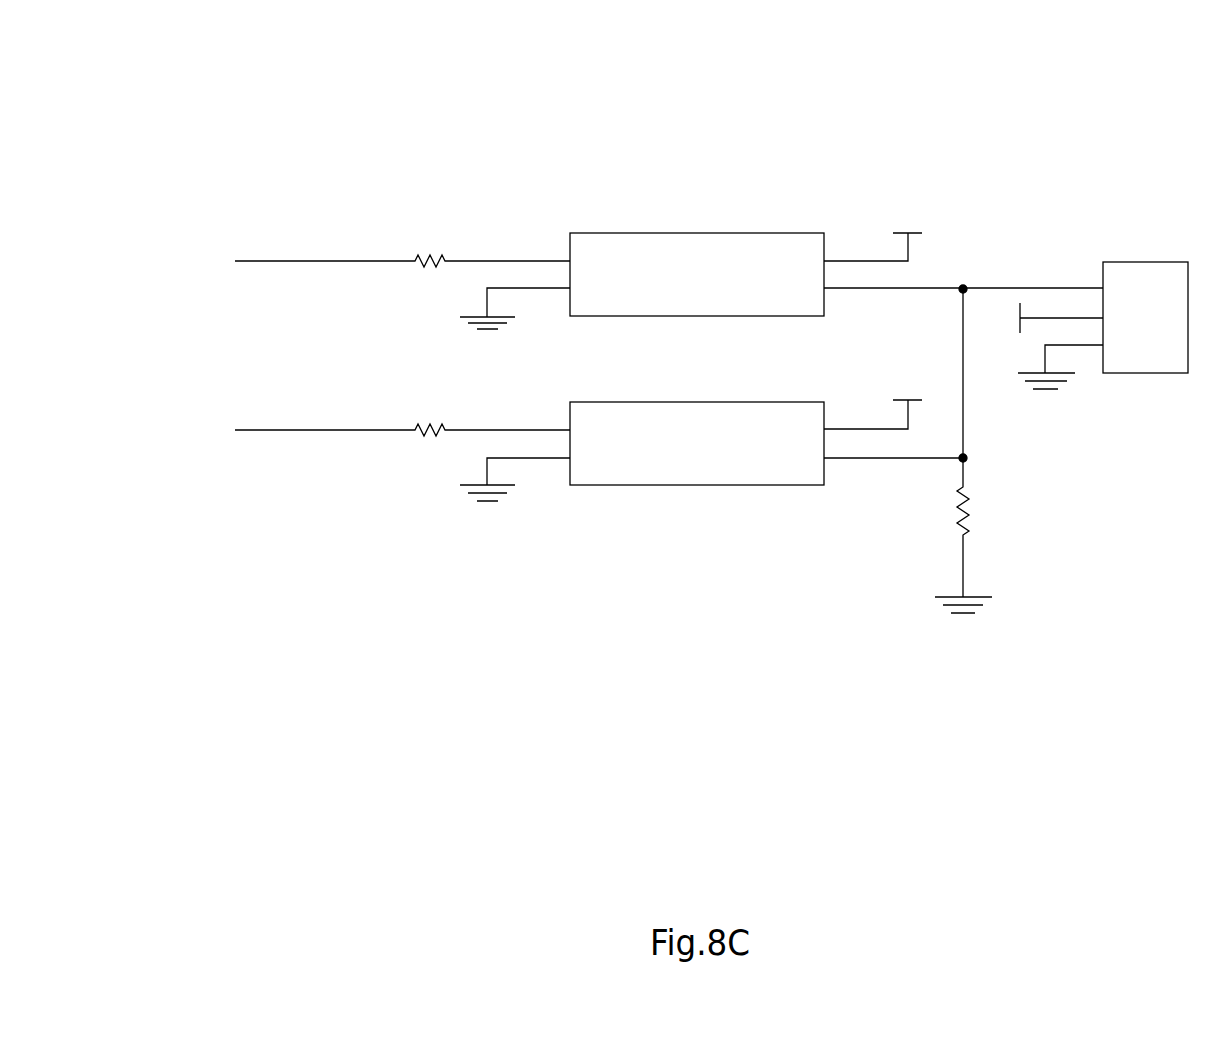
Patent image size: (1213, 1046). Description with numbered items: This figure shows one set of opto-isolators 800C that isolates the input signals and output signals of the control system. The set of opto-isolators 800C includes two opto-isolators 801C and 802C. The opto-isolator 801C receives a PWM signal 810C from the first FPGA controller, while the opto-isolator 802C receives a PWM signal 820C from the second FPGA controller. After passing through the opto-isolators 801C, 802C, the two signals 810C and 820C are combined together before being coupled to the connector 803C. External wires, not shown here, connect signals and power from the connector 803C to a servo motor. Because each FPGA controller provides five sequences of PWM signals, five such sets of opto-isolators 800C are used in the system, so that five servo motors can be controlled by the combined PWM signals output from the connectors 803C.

The set of opto-isolators 800C is at (251, 86).
The PWM signal 810C is at (332, 233).
The PWM signal 820C is at (322, 408).
The opto-isolator 801C is at (735, 233).
The opto-isolator 802C is at (767, 486).
The connector 803C is at (1150, 262).